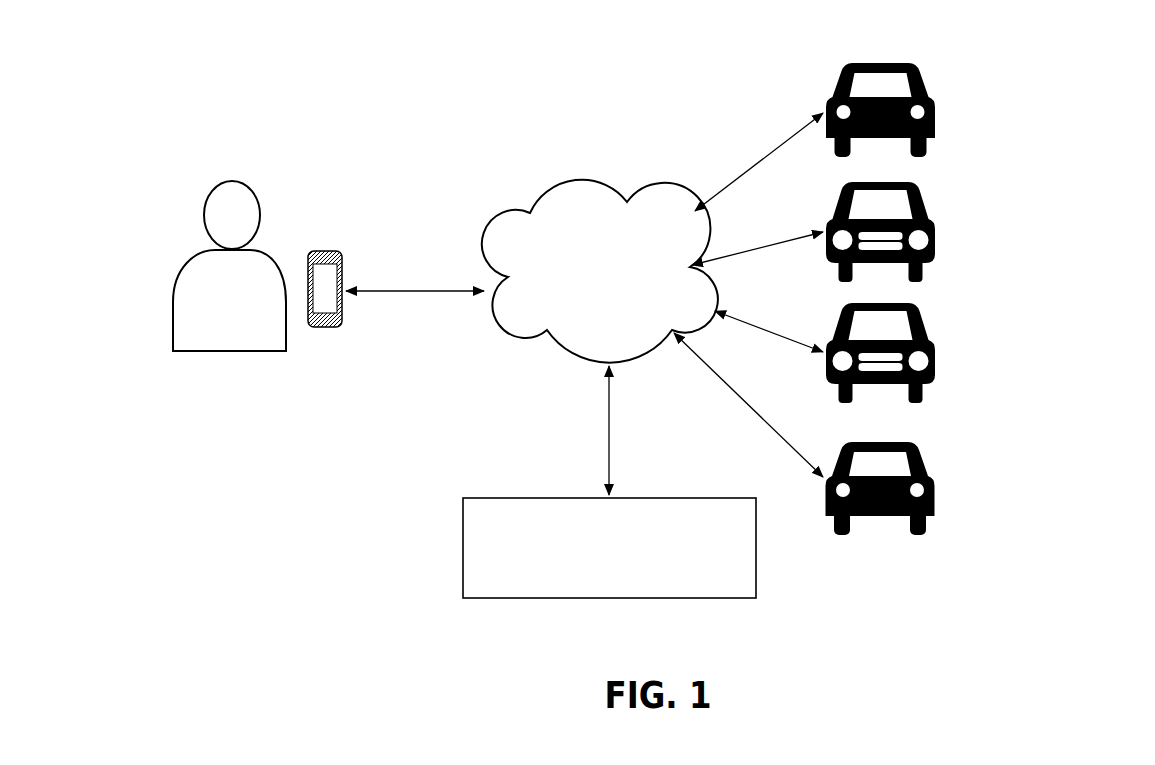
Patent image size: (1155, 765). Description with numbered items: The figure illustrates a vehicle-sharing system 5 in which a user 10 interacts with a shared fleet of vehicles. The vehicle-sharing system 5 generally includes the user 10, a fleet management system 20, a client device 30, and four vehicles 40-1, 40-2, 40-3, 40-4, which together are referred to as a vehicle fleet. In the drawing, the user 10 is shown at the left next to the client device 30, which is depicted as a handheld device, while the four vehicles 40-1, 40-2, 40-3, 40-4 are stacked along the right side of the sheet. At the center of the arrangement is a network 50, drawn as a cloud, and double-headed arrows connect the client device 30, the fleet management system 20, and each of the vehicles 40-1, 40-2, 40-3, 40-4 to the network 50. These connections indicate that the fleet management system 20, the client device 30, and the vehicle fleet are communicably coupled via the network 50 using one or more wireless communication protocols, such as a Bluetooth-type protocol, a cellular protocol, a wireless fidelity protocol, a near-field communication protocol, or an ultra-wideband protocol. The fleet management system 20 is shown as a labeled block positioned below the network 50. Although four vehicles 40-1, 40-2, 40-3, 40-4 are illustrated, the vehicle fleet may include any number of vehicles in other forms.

The vehicle-sharing system 5 is at (1088, 83).
The user 10 is at (245, 181).
The fleet management system 20 is at (658, 498).
The client device 30 is at (344, 258).
The vehicle 40-1 is at (925, 97).
The vehicle 40-2 is at (927, 216).
The vehicle 40-3 is at (925, 321).
The vehicle 40-4 is at (922, 462).
The network 50 is at (594, 182).